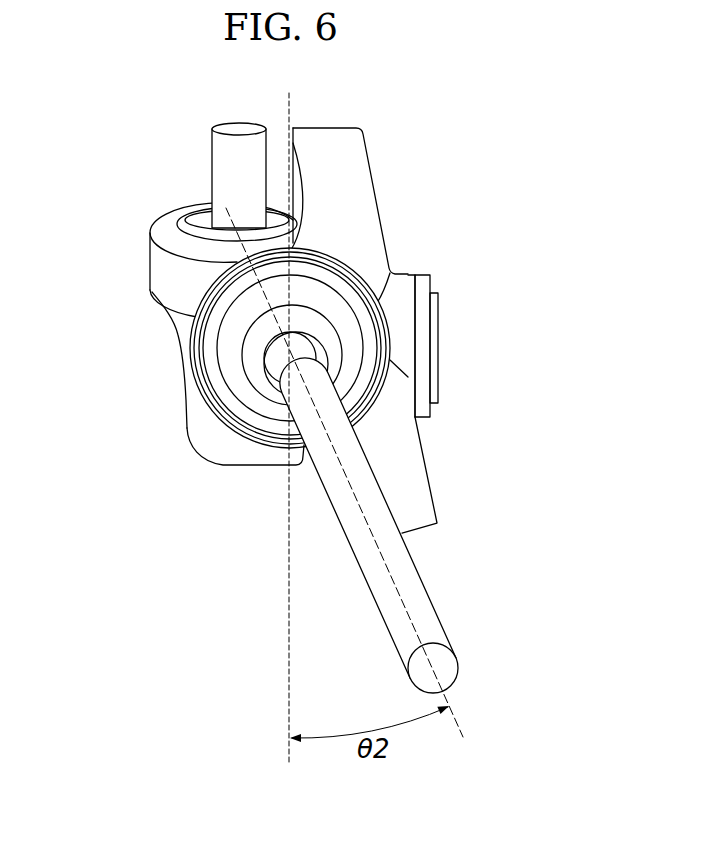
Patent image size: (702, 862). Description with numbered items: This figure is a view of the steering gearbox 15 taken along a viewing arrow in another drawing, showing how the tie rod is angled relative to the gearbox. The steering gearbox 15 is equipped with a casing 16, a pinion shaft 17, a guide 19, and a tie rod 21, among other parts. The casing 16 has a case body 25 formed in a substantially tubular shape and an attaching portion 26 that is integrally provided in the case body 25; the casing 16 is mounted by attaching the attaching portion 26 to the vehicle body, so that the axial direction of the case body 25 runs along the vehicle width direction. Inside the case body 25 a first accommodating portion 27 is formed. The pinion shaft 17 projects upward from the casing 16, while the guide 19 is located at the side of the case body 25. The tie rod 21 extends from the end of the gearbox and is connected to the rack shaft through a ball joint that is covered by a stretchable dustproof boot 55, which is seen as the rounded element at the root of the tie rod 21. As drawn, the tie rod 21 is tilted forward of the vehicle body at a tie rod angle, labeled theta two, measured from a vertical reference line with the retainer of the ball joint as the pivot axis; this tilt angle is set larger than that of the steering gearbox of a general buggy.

The steering gearbox 15 is at (184, 133).
The casing 16 is at (380, 216).
The pinion shaft 17 is at (222, 173).
The guide 19 is at (438, 339).
The tie rod 21 is at (423, 592).
The case body 25 is at (197, 426).
The attaching portion 26 is at (365, 159).
The first accommodating portion 27 is at (227, 443).
The dustproof boot 55 is at (237, 375).